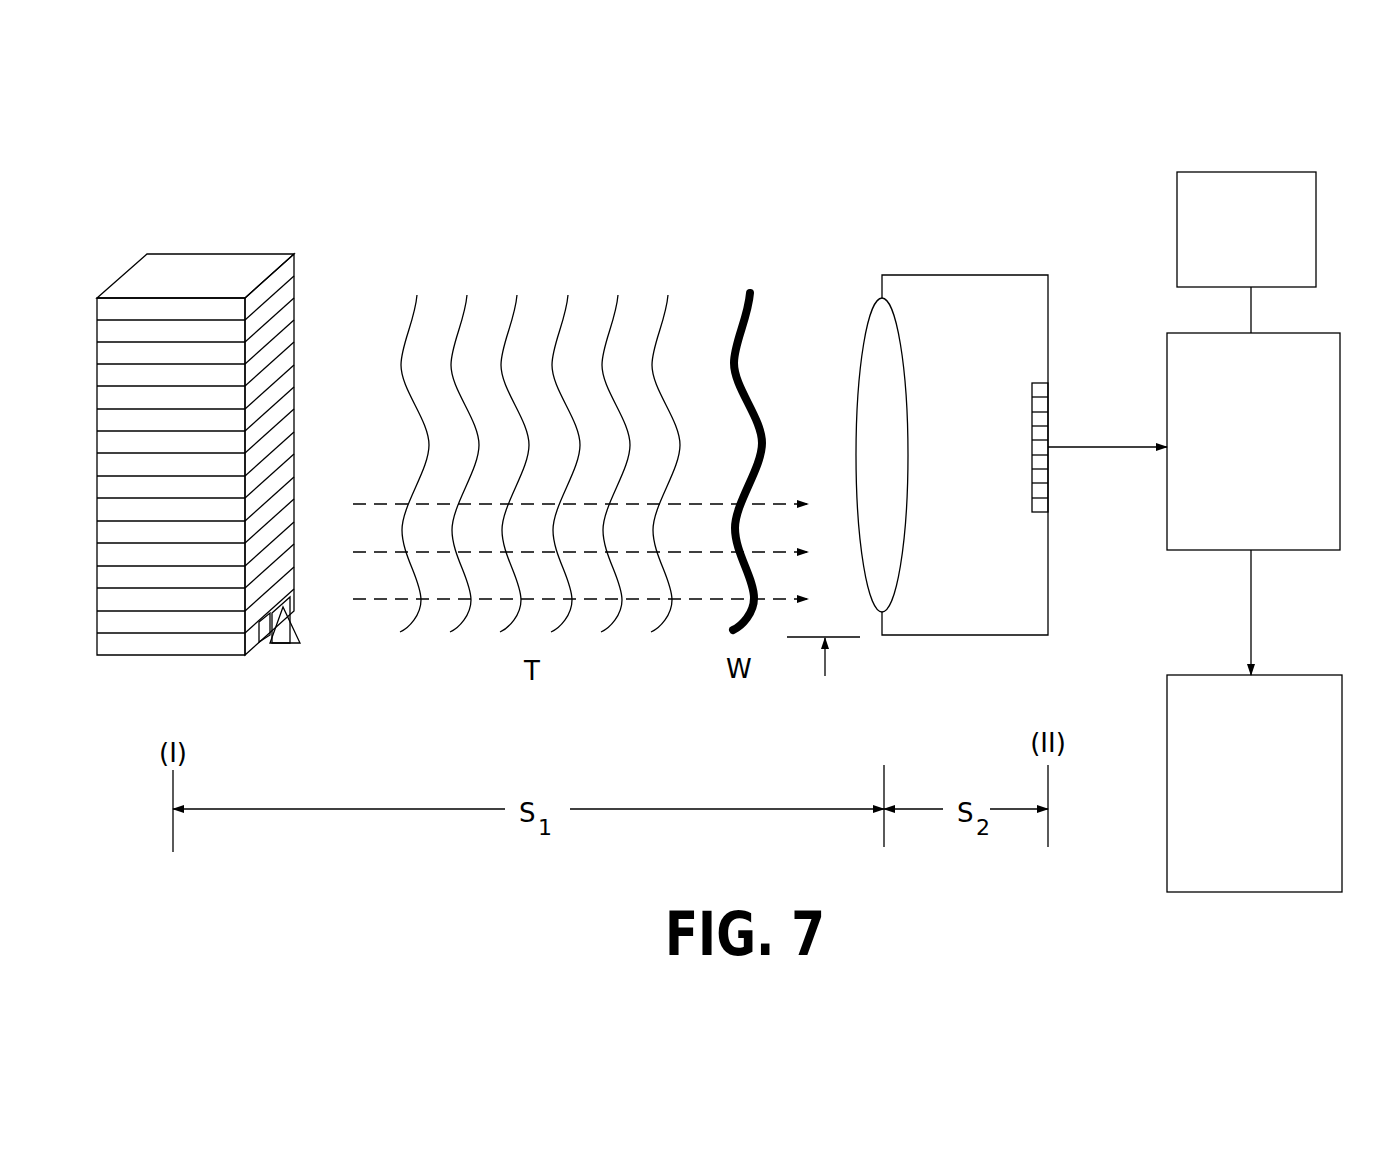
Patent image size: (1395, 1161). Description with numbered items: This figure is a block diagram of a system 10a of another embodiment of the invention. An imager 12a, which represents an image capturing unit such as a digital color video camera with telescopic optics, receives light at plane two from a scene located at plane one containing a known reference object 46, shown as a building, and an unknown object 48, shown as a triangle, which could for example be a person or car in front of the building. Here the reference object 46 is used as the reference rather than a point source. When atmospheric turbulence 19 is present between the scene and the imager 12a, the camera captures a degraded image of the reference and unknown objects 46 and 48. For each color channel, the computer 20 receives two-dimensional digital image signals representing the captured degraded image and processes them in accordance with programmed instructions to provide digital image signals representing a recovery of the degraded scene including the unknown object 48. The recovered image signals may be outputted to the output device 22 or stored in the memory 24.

The system 10a is at (703, 107).
The reference object 46 is at (97, 326).
The unknown object 48 is at (293, 636).
The atmospheric turbulence 19 is at (614, 437).
The imager 12a is at (1048, 302).
The memory 24 is at (1316, 227).
The computer 20 is at (1340, 378).
The output device 22 is at (1342, 742).